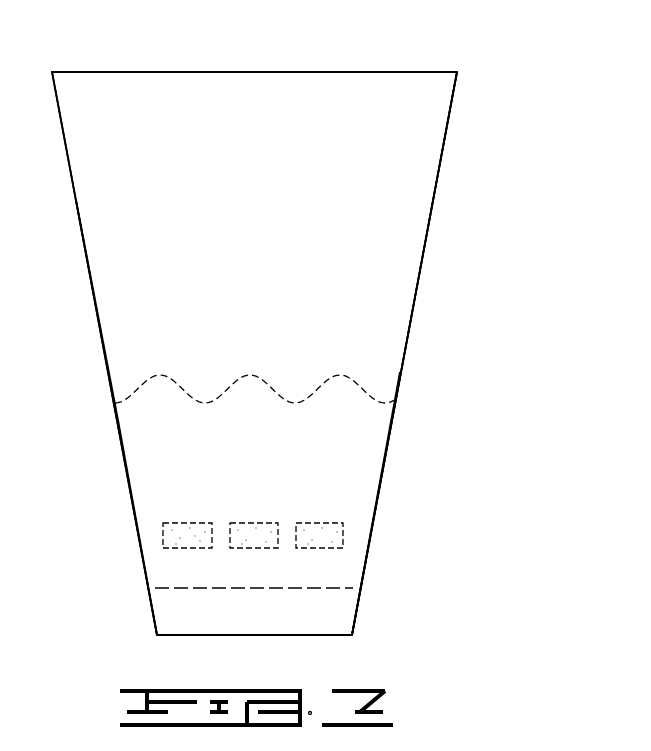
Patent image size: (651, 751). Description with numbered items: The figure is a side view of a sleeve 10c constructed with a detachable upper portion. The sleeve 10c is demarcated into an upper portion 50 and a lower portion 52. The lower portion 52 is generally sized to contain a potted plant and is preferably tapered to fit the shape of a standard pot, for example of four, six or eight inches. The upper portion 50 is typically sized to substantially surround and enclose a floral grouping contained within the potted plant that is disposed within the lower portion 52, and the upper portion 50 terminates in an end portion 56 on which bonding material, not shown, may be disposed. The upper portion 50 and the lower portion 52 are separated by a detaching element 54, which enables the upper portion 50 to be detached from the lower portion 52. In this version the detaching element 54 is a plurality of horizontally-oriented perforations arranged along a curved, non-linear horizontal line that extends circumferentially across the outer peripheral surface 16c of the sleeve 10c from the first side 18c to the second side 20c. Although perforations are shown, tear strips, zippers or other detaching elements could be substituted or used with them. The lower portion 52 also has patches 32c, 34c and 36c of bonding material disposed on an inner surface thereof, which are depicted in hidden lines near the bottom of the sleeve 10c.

The sleeve 10c is at (470, 205).
The outer peripheral surface 16c is at (175, 330).
The first side 18c is at (122, 453).
The second side 20c is at (383, 478).
The patch of bonding material 32c is at (188, 537).
The patch of bonding material 34c is at (250, 537).
The patch of bonding material 36c is at (325, 540).
The upper portion 50 is at (445, 133).
The lower portion 52 is at (388, 447).
The detaching element 54 is at (368, 385).
The end portion 56 is at (200, 72).